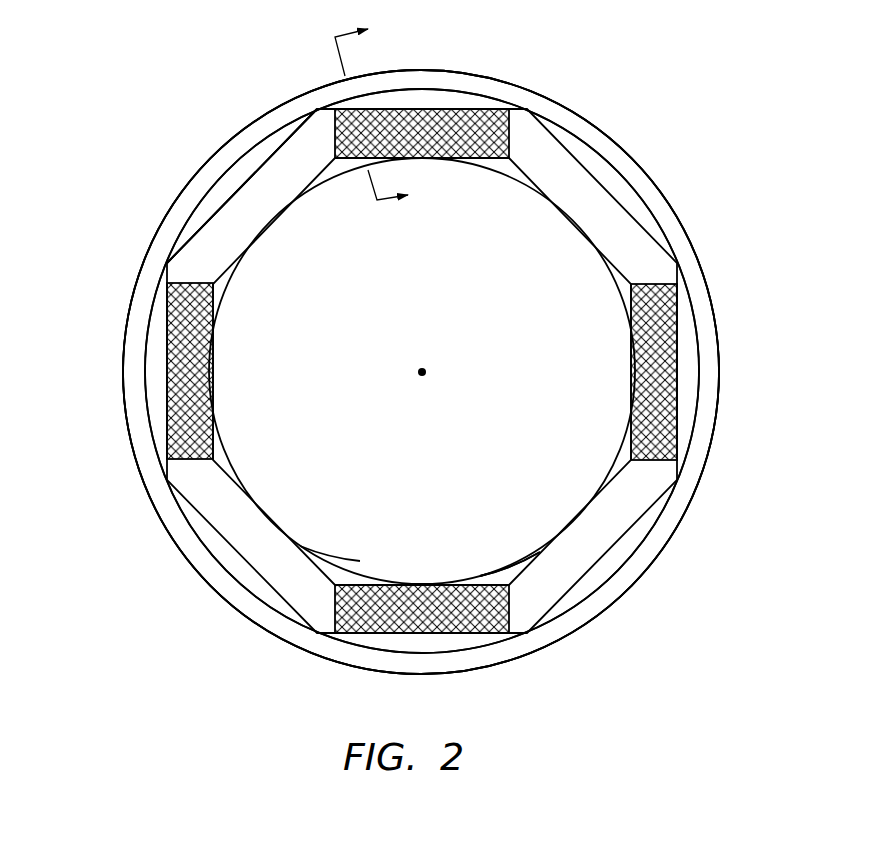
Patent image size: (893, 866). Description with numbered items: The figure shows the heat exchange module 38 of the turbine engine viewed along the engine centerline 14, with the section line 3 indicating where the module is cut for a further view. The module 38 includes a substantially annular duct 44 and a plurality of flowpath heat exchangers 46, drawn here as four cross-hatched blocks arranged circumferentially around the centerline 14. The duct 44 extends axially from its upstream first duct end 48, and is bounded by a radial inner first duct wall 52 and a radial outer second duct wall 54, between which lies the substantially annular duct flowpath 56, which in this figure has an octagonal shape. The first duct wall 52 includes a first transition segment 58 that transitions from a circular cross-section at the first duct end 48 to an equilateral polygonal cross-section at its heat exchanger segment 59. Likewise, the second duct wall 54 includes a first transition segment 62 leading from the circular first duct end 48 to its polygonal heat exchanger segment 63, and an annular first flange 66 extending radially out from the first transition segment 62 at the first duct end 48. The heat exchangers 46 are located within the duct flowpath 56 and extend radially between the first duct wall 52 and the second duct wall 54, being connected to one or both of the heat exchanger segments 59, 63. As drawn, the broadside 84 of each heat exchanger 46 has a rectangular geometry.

The section line 3- 3 is at (383, 110).
The centerline 14 is at (423, 372).
The heat exchange module 38 is at (646, 105).
The duct 44 is at (650, 170).
The flowpath heat exchanger 46 is at (508, 125).
The first duct end 48 is at (277, 613).
The first duct wall 52 is at (344, 567).
The second duct wall 54 is at (330, 637).
The duct flowpath 56 is at (636, 242).
The first transition segment 58 is at (502, 578).
The heat exchanger segment 59 is at (525, 556).
The first transition segment 62 is at (213, 197).
The heat exchanger segment 63 is at (188, 237).
The first flange 66 is at (142, 420).
The broadside 84 is at (215, 360).